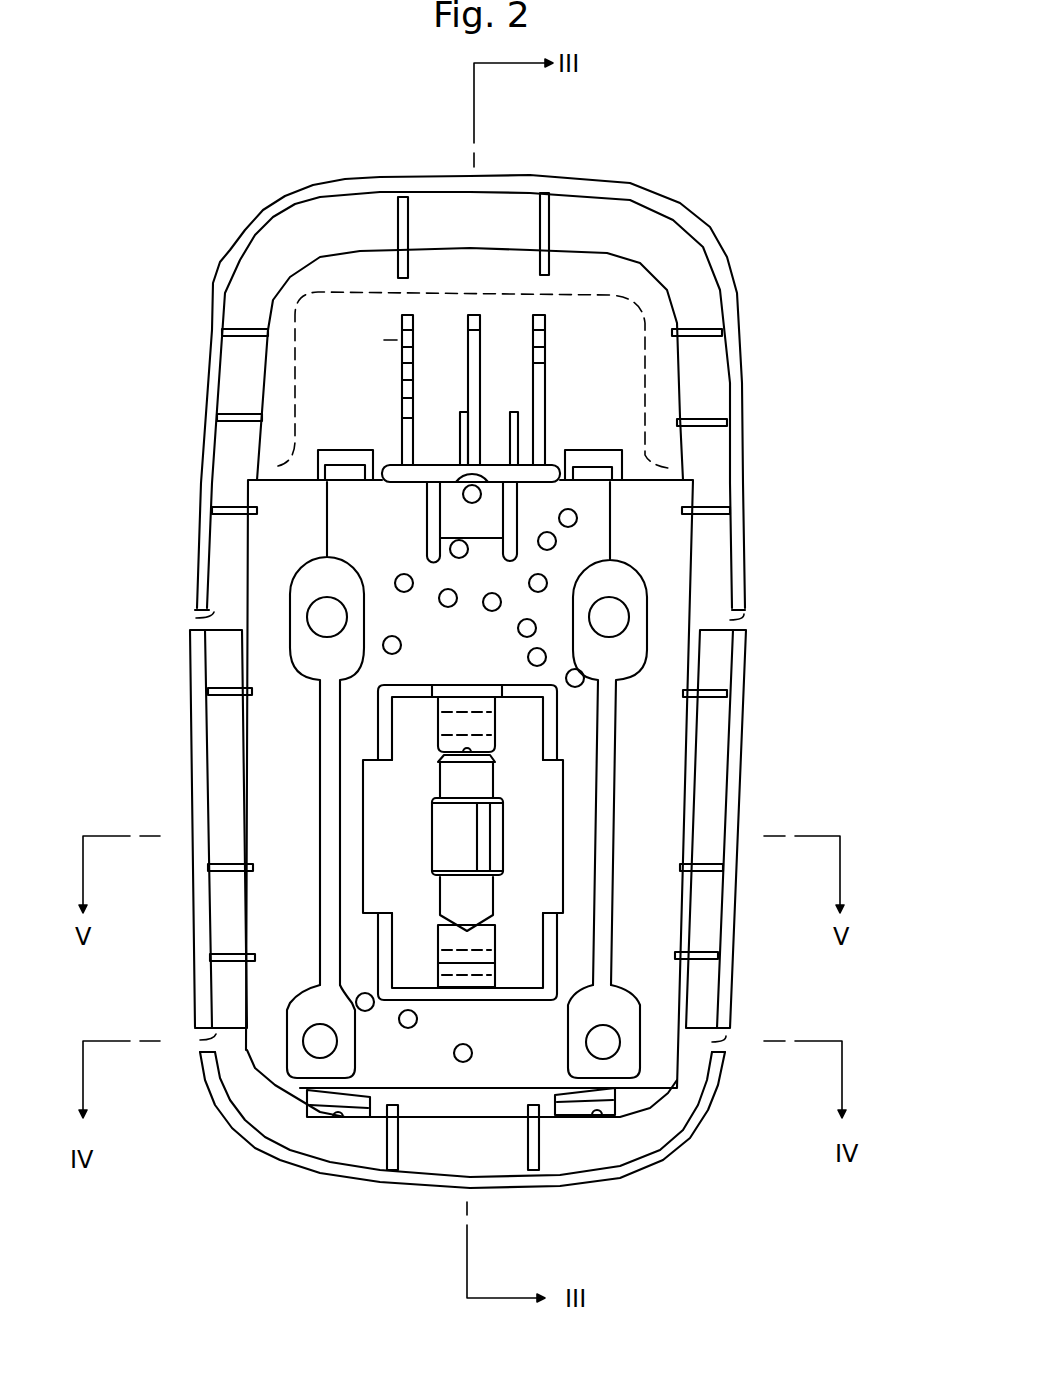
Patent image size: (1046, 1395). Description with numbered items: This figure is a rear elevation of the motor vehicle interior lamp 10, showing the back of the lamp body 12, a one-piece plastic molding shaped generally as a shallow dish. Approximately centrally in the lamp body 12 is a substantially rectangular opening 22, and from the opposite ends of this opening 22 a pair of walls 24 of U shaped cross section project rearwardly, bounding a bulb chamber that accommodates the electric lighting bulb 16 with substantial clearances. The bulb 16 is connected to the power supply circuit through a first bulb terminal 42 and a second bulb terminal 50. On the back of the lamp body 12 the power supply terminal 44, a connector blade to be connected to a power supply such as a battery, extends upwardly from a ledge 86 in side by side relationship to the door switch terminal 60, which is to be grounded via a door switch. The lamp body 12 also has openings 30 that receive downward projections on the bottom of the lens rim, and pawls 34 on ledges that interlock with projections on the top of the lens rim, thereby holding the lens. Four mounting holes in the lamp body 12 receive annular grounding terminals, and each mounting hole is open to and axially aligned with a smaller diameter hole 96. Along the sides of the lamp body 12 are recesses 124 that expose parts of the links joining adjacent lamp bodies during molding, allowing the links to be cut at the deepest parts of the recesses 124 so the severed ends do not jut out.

The motor vehicle interior lamp 10 is at (673, 166).
The lamp body 12 is at (714, 222).
The electric lighting bulb 16 is at (452, 843).
The opening 22 is at (566, 828).
The walls 24 is at (483, 728).
The openings 30 is at (345, 1118).
The pawls 34 is at (348, 476).
The first bulb terminal 42 is at (548, 742).
The power supply terminal 44 is at (513, 428).
The second bulb terminal 50 is at (483, 935).
The door switch terminal 60 is at (460, 426).
The ledge 86 is at (497, 472).
The smaller diameter hole 96 is at (315, 616).
The recesses 124 is at (220, 628).